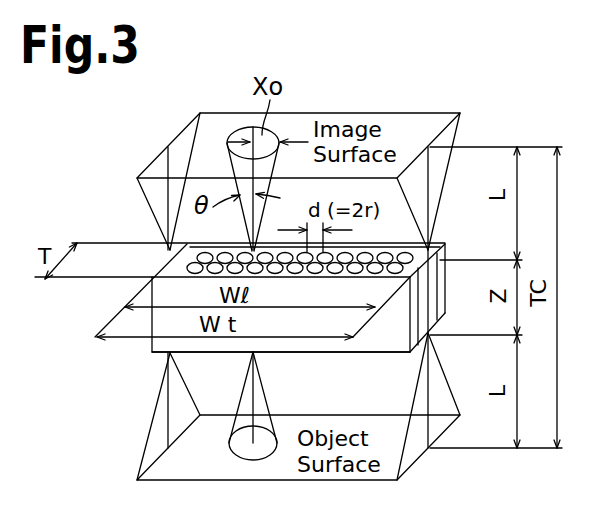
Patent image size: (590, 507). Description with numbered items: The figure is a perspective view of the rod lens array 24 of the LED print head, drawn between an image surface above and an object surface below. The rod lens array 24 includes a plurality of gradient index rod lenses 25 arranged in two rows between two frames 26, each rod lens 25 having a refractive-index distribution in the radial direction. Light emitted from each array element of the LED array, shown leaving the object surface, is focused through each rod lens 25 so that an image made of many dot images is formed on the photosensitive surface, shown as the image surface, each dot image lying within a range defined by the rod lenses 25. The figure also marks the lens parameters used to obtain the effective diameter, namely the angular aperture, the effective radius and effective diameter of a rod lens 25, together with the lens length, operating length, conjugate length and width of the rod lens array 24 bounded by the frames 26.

The rod lens array 24 is at (148, 355).
The rod lens 25 is at (166, 259).
The frame 26 is at (322, 347).